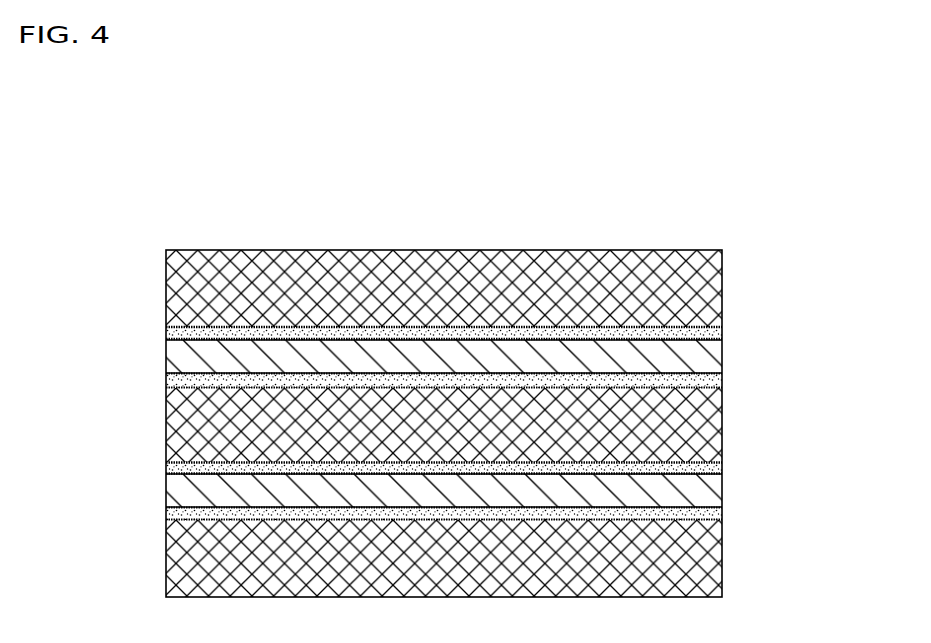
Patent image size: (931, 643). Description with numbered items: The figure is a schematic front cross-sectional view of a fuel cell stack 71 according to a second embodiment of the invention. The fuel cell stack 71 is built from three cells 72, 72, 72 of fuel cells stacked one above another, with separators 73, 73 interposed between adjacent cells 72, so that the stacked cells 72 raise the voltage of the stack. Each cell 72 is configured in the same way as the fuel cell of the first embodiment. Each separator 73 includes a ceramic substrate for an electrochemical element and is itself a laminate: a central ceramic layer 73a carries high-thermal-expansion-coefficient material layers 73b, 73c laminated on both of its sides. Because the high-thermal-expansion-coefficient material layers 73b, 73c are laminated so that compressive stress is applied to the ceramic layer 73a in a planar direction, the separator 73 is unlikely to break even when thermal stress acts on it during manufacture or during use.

The fuel cell stack 71 is at (218, 185).
The cell 72 is at (166, 294).
The separator 73 is at (819, 281).
The ceramic layer 73a is at (722, 365).
The high-thermal-expansion-coefficient material layer 73b is at (722, 333).
The high-thermal-expansion-coefficient material layer 73c is at (722, 378).